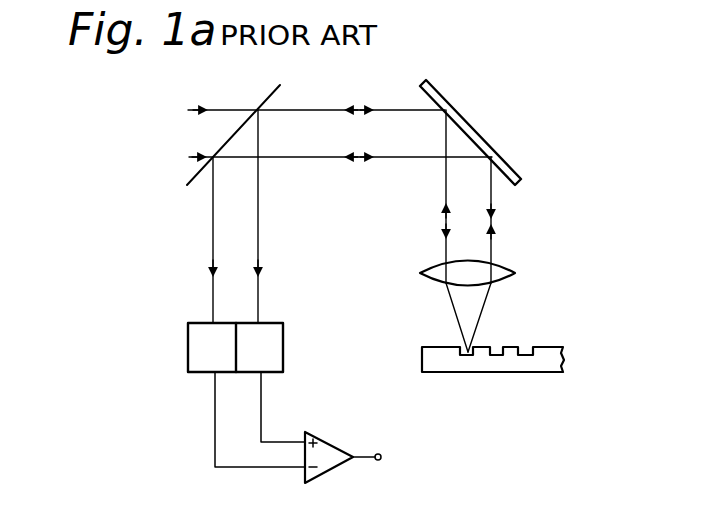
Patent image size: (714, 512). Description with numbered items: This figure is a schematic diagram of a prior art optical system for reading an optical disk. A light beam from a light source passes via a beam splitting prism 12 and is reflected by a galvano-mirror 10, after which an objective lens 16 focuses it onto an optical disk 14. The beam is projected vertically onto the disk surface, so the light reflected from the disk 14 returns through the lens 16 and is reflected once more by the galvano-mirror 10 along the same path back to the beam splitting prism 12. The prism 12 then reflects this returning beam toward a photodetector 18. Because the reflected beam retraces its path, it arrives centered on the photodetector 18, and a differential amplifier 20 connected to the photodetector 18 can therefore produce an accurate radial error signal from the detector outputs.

The galvano-mirror 10 is at (440, 92).
The beam splitting prism 12 is at (282, 87).
The optical disk 14 is at (540, 347).
The objective lens 16 is at (510, 268).
The photodetector 18 is at (285, 352).
The differential amplifier 20 is at (338, 467).